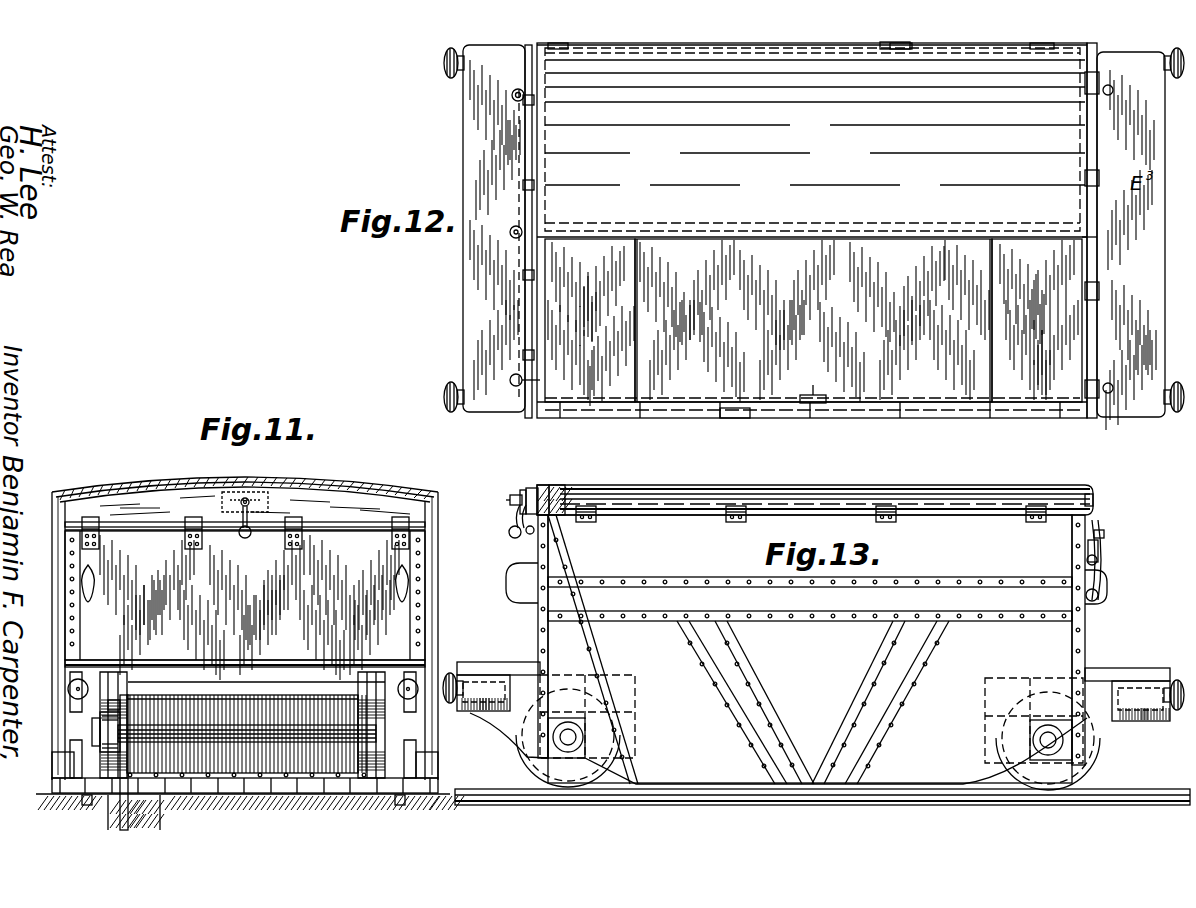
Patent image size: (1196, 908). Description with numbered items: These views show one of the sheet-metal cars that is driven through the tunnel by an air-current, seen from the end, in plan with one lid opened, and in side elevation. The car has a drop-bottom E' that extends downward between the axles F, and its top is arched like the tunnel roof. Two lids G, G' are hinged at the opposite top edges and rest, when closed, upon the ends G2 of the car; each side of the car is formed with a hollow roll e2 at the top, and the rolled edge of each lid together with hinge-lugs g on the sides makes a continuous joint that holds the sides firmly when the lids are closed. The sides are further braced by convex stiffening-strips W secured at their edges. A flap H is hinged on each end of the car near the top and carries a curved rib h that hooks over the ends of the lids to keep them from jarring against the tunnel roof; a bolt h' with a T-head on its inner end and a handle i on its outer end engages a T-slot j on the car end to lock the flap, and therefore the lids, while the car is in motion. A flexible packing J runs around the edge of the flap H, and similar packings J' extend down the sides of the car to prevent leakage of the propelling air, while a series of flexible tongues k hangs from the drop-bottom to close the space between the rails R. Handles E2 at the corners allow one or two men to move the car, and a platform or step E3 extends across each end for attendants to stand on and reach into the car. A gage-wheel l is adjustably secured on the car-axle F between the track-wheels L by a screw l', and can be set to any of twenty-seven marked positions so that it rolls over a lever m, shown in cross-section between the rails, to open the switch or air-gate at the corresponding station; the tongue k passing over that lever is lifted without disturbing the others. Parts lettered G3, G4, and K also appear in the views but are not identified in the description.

In FIG. 12, the drop-bottom E' is at (813, 320).
In FIG. 11, the drop-bottom E' is at (247, 747).
In FIG. 13, the drop-bottom E' is at (778, 748).
In FIG. 13, the handles E2 is at (1118, 604).
In FIG. 12, the platform or step E3 is at (466, 322).
In FIG. 11, the platform or step E3 is at (188, 662).
In FIG. 13, the platform or step E3 is at (492, 664).
In FIG. 13, the car-axle F is at (1048, 752).
In FIG. 12, the lid G is at (812, 248).
In FIG. 13, the lid G is at (815, 487).
In FIG. 12, the lid G' is at (815, 137).
In FIG. 12, the ends of the car G2 is at (545, 300).
In FIG. 11, the ends of the car G2 is at (245, 605).
In FIG. 13, the ends of the car G2 is at (1078, 632).
In FIG. 12, the door fastening G3 is at (806, 395).
In FIG. 12, the door partition G4 is at (815, 242).
In FIG. 12, the flap H is at (540, 382).
In FIG. 11, the flap H is at (245, 515).
In FIG. 13, the flap H is at (516, 520).
In FIG. 12, the flexible packing J is at (809, 246).
In FIG. 11, the flexible packing J is at (232, 618).
In FIG. 13, the flexible packing J is at (515, 486).
In FIG. 11, the packings J' is at (263, 693).
In FIG. 13, the packings J' is at (543, 649).
In FIG. 11, the roller K is at (246, 734).
In FIG. 11, the track-wheels L is at (245, 764).
In FIG. 13, the track-wheels L is at (1098, 764).
In FIG. 11, the rails R is at (404, 800).
In FIG. 13, the convex stiffening-strips W is at (774, 626).
In FIG. 12, the roll e2 is at (938, 402).
In FIG. 12, the hinge-lugs g is at (892, 47).
In FIG. 13, the hinge-lugs g is at (1025, 516).
In FIG. 12, the curved rib h is at (1115, 264).
In FIG. 11, the curved rib h is at (243, 500).
In FIG. 13, the curved rib h is at (831, 520).
In FIG. 12, the bolt h' is at (507, 159).
In FIG. 13, the bolt h' is at (822, 522).
In FIG. 12, the handle i is at (510, 234).
In FIG. 11, the handle i is at (244, 538).
In FIG. 13, the handle i is at (510, 535).
In FIG. 12, the T-slot j is at (1098, 238).
In FIG. 11, the T-slot j is at (248, 498).
In FIG. 13, the T-slot j is at (1094, 502).
In FIG. 11, the flexible tongues k is at (228, 794).
In FIG. 11, the gage-wheel l is at (117, 732).
In FIG. 11, the screw l' is at (257, 684).
In FIG. 11, the lever m is at (128, 810).